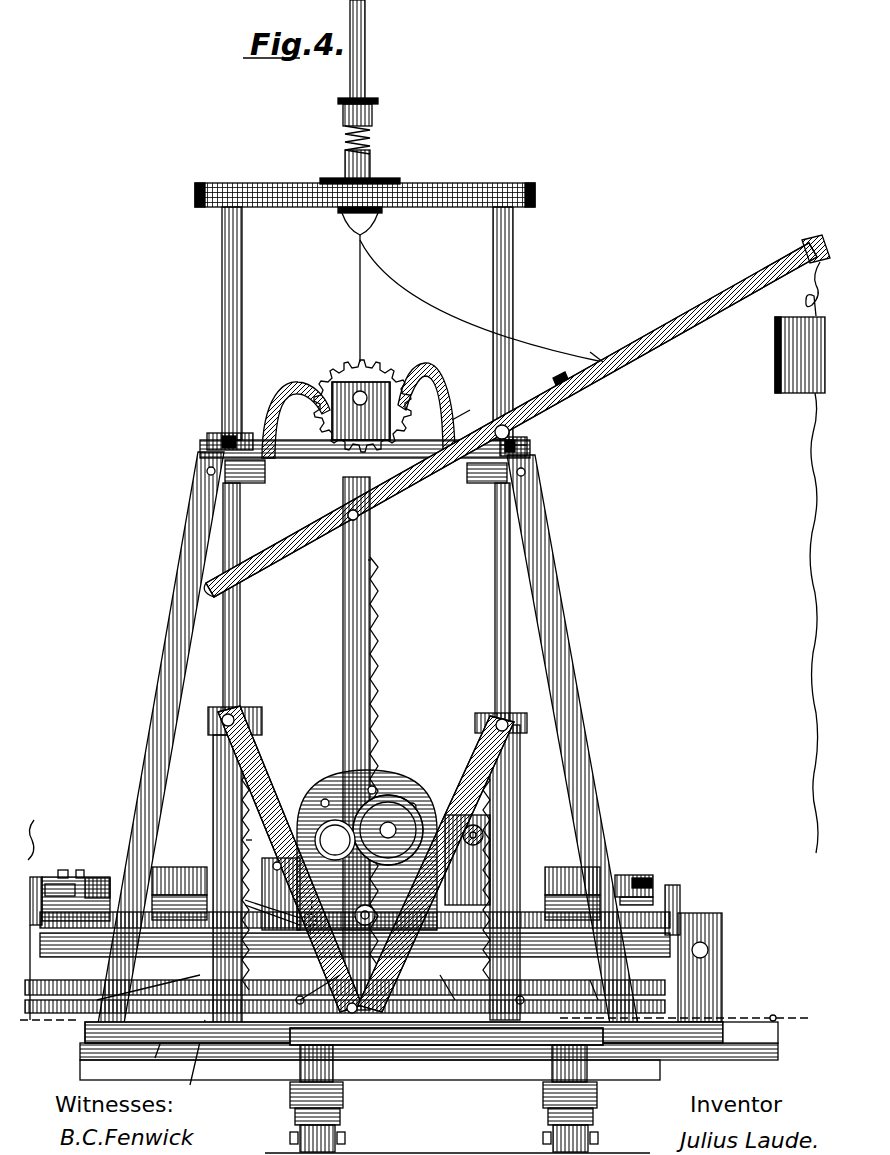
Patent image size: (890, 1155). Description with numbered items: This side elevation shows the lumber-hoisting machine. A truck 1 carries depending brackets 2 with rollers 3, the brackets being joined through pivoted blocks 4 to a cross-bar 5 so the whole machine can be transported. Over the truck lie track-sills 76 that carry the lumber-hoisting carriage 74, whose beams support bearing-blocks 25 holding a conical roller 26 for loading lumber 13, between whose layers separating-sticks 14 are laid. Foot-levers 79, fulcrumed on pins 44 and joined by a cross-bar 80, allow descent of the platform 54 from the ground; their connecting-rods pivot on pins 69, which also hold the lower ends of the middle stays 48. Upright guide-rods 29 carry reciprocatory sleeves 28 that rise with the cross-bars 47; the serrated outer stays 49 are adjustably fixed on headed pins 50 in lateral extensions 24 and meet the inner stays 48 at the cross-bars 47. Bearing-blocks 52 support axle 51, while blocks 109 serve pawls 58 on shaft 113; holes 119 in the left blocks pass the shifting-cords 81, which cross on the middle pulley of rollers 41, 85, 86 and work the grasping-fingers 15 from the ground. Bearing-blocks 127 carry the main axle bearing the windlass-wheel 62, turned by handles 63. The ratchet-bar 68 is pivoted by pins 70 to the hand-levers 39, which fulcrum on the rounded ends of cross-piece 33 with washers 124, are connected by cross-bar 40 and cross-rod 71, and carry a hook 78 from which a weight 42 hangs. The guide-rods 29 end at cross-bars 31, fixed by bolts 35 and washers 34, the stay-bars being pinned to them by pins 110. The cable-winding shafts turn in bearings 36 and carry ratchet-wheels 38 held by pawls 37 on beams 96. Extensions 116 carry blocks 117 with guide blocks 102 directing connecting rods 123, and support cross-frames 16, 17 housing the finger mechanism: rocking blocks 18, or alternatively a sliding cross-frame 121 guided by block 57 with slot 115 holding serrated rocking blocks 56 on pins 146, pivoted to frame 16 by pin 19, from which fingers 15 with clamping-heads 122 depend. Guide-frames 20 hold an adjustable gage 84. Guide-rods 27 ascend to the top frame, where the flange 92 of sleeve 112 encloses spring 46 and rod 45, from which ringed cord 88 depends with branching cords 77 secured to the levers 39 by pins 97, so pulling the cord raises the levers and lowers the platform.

The truck 1 is at (443, 1095).
The brackets 2 is at (444, 1116).
The rollers 3 is at (444, 1138).
The pivoted blocks 4 is at (443, 1063).
The cross-bar 5 is at (446, 1036).
The lumber 13 is at (588, 981).
The separating-sticks 14 is at (158, 1046).
The grasping-fingers 15 is at (345, 980).
The cross-frame 16 is at (718, 897).
The cross-frame 17 is at (690, 898).
The rocking blocks 18 is at (645, 875).
The pin 19 is at (82, 870).
The guide-frames 20 is at (358, 902).
The lateral extensions 24 is at (408, 984).
The bearing-blocks 25 is at (700, 967).
The conical roller 26 is at (710, 947).
The guide-rods 27 is at (222, 330).
The reciprocatory sleeves 28 is at (377, 907).
The upright guide-rods 29 is at (240, 518).
The cross-bars 31 is at (366, 471).
The cross-piece 33 is at (510, 428).
The washers 34 is at (520, 437).
The bolts 35 is at (218, 433).
The bearings 36 is at (361, 411).
The pawls 37 is at (301, 396).
The ratchet-wheels 38 is at (362, 406).
The hand-levers 39 is at (695, 335).
The cross-bar 40 is at (808, 240).
The roller 41 is at (308, 910).
The weight 42 is at (806, 375).
The pins 44 is at (231, 879).
The reciprocating rod 45 is at (370, 160).
The spring 46 is at (370, 141).
The cross-bars 47 is at (256, 712).
The inner stays 48 is at (531, 707).
The outer stays 49 is at (494, 713).
The headed pins 50 is at (222, 714).
The axle 51 is at (573, 747).
The bearing-blocks 52 is at (467, 860).
The platform 54 is at (355, 945).
The serrated rocking blocks 56 is at (48, 877).
The block 57 is at (388, 830).
The pawls 58 is at (310, 790).
The windlass-wheel 62 is at (395, 780).
The handles 63 is at (324, 798).
The ratchet-bar 68 is at (359, 560).
The pins 69 is at (350, 1014).
The pins 70 is at (372, 518).
The cross-rod 71 is at (558, 372).
The lumber-hoisting carriage 74 is at (50, 1098).
The track-sills 76 is at (370, 1070).
The branching cords 77 is at (430, 316).
The hook 78 is at (804, 297).
The foot-levers 79 is at (429, 1052).
The cross-bar 80 is at (418, 1027).
The shifting-cords 81 is at (429, 1031).
The gage 84 is at (207, 440).
The roller 85 is at (460, 867).
The roller 86 is at (378, 909).
The ringed cord 88 is at (359, 331).
The flange 92 is at (345, 180).
The beams 96 is at (365, 449).
The pins 97 is at (602, 351).
The guide blocks 102 is at (178, 875).
The blocks 109 is at (272, 898).
The pins 110 is at (205, 472).
The tubular upright 112 is at (372, 113).
The shaft 113 is at (271, 894).
The slot 115 is at (655, 880).
The extensions 116 is at (355, 924).
The blocks 117 is at (376, 907).
The holes 119 is at (280, 908).
The sliding cross-frame 121 is at (95, 870).
The clamping-heads 122 is at (140, 1000).
The connecting rods 123 is at (100, 878).
The washers 124 is at (478, 410).
The bearing-blocks 127 is at (331, 840).
The pins 146 is at (62, 870).